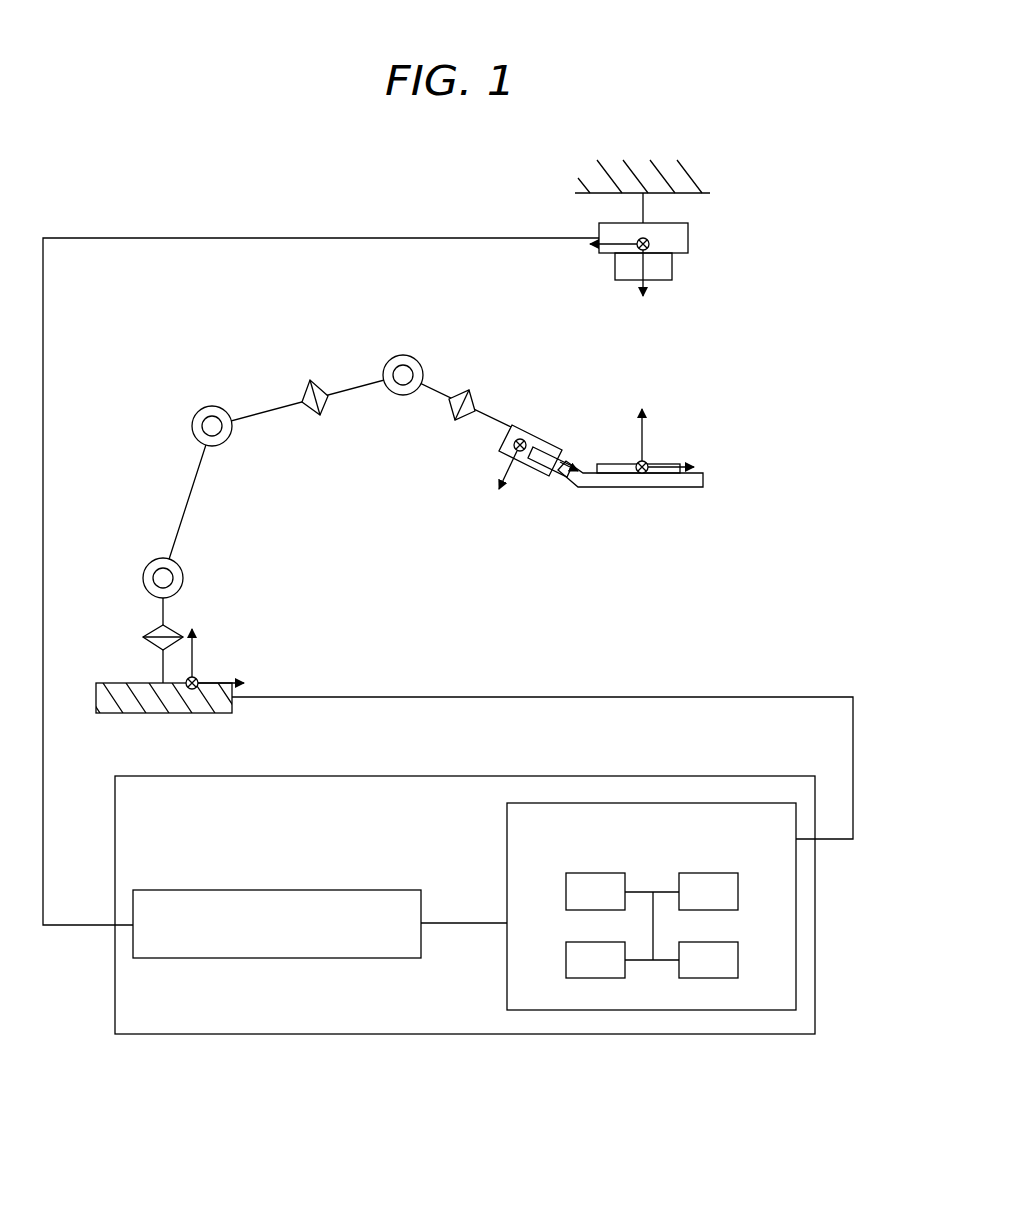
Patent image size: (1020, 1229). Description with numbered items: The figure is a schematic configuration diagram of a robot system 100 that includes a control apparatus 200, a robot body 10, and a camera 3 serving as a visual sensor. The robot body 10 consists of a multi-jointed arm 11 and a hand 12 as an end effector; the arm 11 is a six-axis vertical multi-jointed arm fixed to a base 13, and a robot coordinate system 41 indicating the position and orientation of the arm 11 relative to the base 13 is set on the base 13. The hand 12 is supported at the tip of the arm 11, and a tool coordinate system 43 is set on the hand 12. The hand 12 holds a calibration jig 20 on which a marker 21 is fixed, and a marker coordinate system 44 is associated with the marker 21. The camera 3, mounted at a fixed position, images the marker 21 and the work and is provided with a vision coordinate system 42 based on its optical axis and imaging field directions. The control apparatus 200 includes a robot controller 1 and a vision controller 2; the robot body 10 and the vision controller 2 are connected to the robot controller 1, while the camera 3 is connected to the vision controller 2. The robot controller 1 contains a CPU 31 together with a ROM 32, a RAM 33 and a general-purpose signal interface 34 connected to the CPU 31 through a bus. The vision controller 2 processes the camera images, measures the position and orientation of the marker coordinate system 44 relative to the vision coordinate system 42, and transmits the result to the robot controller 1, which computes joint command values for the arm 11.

The robot system 100 is at (680, 127).
The camera 3 is at (668, 222).
The vision coordinate system 42 is at (668, 270).
The robot body 10 is at (205, 364).
The multi-jointed arm 11 is at (280, 408).
The hand 12 is at (538, 438).
The tool coordinate system 43 is at (514, 478).
The calibration jig 20 is at (666, 480).
The marker 21 is at (615, 465).
The marker coordinate system 44 is at (645, 430).
The base 13 is at (115, 685).
The robot coordinate system 41 is at (196, 645).
The control apparatus 200 is at (718, 777).
The robot controller 1 is at (507, 826).
The vision controller 2 is at (344, 890).
The CPU 31 is at (566, 892).
The ROM 32 is at (566, 960).
The RAM 33 is at (738, 892).
The general-purpose signal interface 34 is at (738, 960).